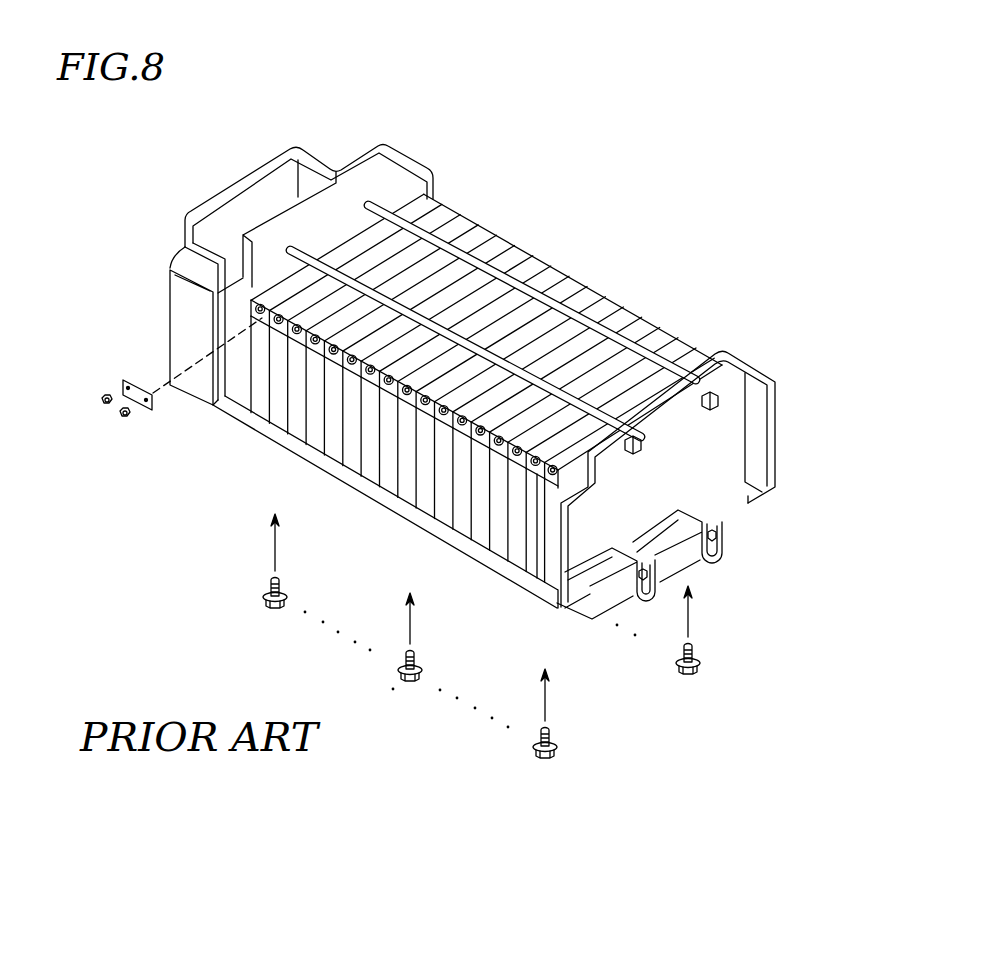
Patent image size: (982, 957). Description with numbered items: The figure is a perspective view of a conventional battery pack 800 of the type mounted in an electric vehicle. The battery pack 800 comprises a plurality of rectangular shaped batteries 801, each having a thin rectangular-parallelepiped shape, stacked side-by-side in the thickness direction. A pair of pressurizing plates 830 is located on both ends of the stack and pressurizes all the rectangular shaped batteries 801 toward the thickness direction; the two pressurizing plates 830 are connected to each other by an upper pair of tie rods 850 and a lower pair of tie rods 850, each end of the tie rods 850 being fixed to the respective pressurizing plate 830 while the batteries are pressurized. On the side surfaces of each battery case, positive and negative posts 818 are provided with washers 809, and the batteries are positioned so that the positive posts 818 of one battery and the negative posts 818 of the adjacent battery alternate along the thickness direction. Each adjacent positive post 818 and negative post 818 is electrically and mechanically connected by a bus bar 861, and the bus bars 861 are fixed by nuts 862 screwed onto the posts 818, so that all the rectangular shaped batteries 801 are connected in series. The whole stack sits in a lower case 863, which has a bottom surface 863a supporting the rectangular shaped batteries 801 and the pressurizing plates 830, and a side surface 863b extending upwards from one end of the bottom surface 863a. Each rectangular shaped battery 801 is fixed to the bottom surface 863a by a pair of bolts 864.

The battery pack 800 is at (721, 151).
The rectangular shaped battery 801 is at (477, 238).
The washer 809 is at (520, 460).
The positive and negative posts 818 is at (372, 384).
The pressurizing plate 830 is at (350, 180).
The tie rod 850 is at (483, 358).
The bus bar 861 is at (125, 380).
The nut 862 is at (107, 408).
The lower case 863 is at (237, 184).
The bottom surface 863a is at (295, 446).
The side surface 863b is at (195, 238).
The bolt 864 is at (275, 611).